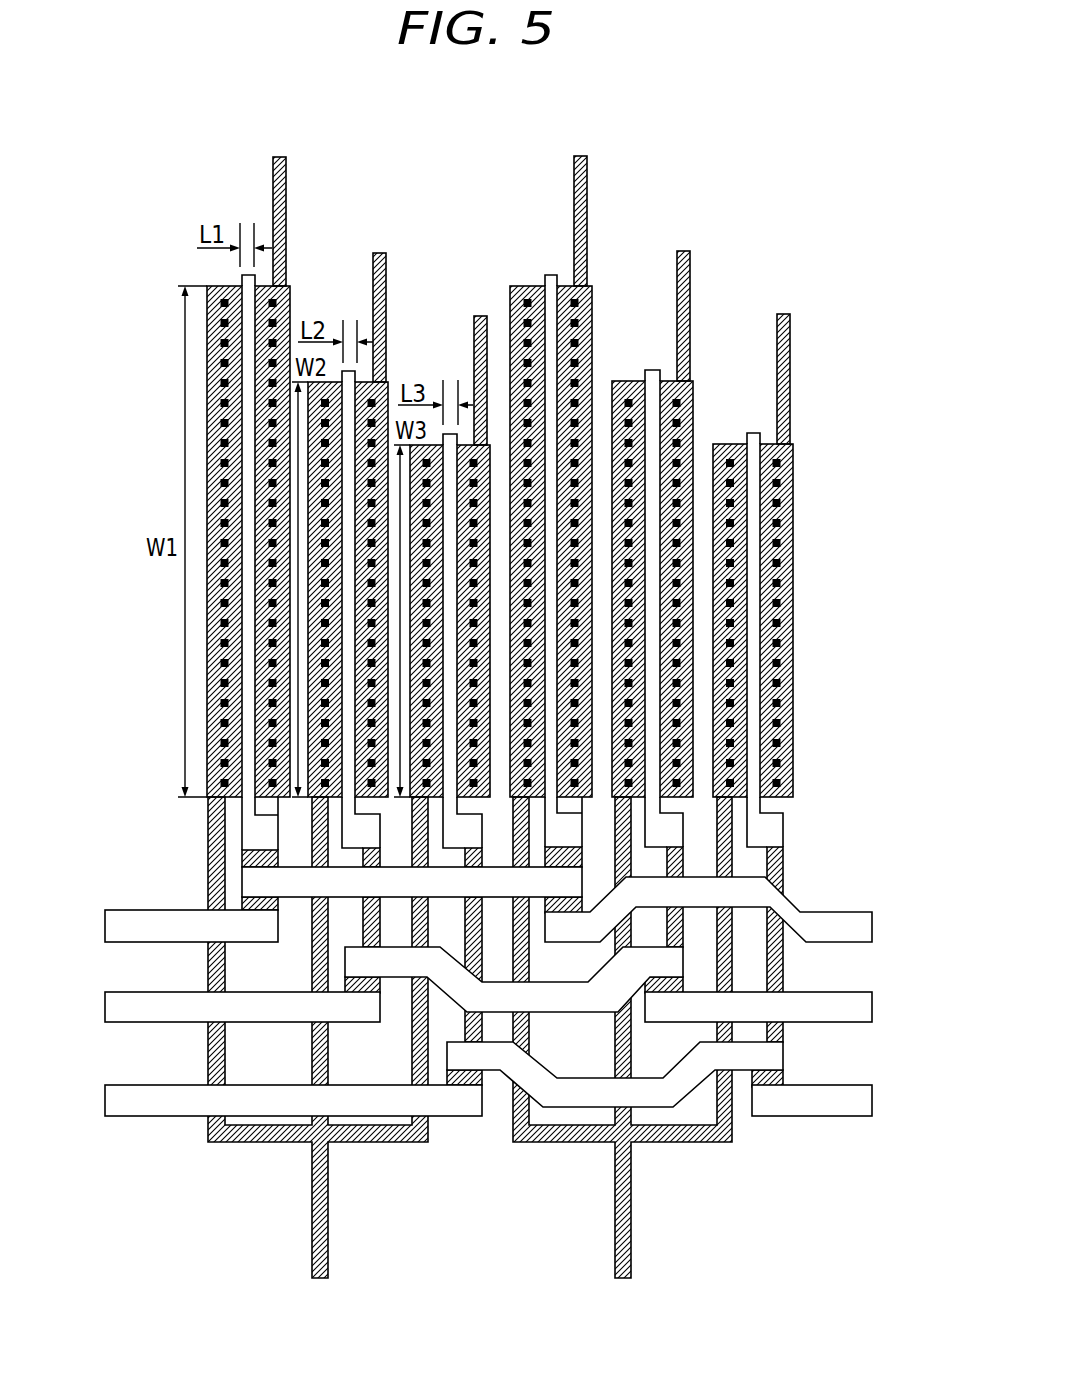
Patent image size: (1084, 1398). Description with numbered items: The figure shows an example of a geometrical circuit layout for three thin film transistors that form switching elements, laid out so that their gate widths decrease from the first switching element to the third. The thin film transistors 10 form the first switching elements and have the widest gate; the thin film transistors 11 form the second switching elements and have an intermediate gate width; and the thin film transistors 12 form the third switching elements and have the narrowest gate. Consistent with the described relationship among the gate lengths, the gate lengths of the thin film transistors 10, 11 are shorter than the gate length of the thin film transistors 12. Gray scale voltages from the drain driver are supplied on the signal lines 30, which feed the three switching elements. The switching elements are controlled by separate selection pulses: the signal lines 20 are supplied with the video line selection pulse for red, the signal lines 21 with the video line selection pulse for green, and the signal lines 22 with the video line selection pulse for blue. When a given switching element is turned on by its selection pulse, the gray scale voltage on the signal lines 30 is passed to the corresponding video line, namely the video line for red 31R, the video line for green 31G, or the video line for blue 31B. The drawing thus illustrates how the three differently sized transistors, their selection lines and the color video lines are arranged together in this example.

The thin film transistor forming switching element SW1 10 is at (592, 308).
The thin film transistor forming switching element SW2 11 is at (693, 383).
The thin film transistor forming switching element SW3 12 is at (793, 444).
The signal line supplied with video line selection pulse φR 20 is at (910, 905).
The signal line supplied with video line selection pulse φG 21 is at (910, 985).
The signal line supplied with video line selection pulse φB 22 is at (910, 1080).
The signal line supplied with gray scale voltages 30 is at (680, 1250).
The video line for red 31R is at (579, 156).
The video line for green 31G is at (683, 251).
The video line for blue 31B is at (783, 314).